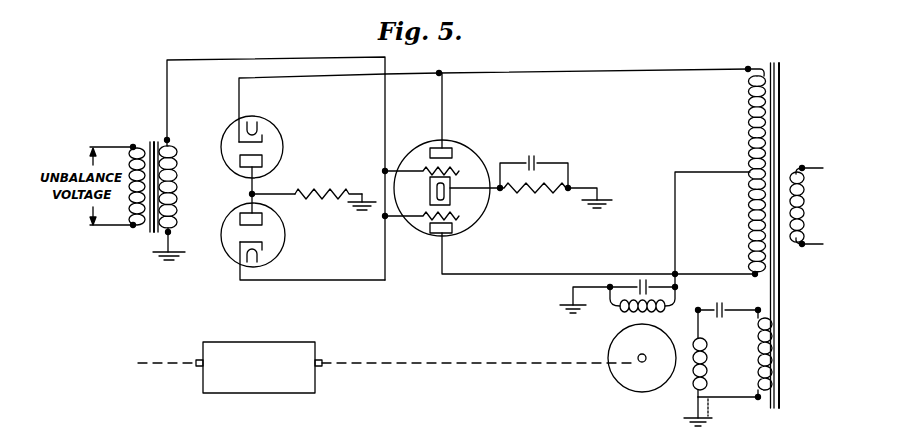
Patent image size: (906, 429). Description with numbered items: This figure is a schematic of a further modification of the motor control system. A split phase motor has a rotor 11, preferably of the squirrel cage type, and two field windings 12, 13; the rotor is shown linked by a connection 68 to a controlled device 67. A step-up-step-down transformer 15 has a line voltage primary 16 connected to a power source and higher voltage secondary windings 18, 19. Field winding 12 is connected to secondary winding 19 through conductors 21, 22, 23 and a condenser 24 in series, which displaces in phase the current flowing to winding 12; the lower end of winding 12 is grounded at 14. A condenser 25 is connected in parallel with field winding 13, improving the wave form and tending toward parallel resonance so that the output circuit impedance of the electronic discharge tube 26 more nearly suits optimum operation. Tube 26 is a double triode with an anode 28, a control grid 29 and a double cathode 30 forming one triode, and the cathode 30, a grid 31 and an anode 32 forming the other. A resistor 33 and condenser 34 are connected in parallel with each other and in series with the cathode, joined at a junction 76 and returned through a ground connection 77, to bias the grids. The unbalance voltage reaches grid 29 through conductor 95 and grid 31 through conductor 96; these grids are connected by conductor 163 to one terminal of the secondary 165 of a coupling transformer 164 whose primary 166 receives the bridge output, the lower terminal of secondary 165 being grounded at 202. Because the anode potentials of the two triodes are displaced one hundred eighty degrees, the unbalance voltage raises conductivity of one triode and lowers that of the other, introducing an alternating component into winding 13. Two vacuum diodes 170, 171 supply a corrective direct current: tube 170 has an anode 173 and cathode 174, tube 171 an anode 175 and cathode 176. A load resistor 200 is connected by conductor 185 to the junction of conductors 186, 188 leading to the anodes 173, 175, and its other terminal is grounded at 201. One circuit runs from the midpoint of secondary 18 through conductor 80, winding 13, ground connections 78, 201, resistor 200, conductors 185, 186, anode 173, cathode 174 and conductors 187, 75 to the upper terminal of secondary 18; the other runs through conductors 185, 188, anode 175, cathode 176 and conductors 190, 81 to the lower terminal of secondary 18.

The rotor 11 is at (631, 381).
The field winding 12 is at (706, 361).
The field winding 13 is at (620, 312).
The ground 14 is at (689, 417).
The step-up-step-down transformer 15 is at (799, 152).
The line voltage primary 16 is at (800, 205).
The secondary winding 18 is at (750, 131).
The secondary winding 19 is at (757, 366).
The conductor 21 is at (728, 398).
The conductor 22 is at (705, 310).
The conductor 23 is at (748, 310).
The condenser 24 is at (723, 313).
The condenser 25 is at (650, 280).
The electronic discharge tube 26 is at (476, 144).
The anode 28 is at (447, 147).
The control grid 29 is at (425, 168).
The cathode 30 is at (451, 183).
The grid 31 is at (425, 218).
The anode 32 is at (455, 228).
The resistor 33 is at (528, 190).
The condenser 34 is at (539, 162).
The controlled device 67 is at (276, 344).
The mechanical connection 68 is at (447, 361).
The conductor 75 is at (607, 71).
The junction 76 is at (497, 192).
The ground 77 is at (606, 198).
The ground connection 78 is at (572, 303).
The conductor 80 is at (677, 215).
The conductor 81 is at (546, 273).
The conductor 95 is at (385, 169).
The conductor 96 is at (385, 217).
The conductor 163 is at (285, 58).
The coupling transformer 164 is at (146, 134).
The secondary 165 is at (172, 147).
The primary 166 is at (133, 225).
The tube 170 is at (290, 132).
The tube 171 is at (290, 244).
The anode 173 is at (262, 160).
The cathode 174 is at (266, 124).
The anode 175 is at (240, 217).
The cathode 176 is at (247, 240).
The conductor 185 is at (276, 193).
The conductor 186 is at (251, 190).
The conductor 187 is at (329, 75).
The conductor 188 is at (278, 205).
The conductor 190 is at (359, 280).
The load resistor 200 is at (323, 199).
The ground connection 201 is at (364, 201).
The ground connection 202 is at (180, 251).